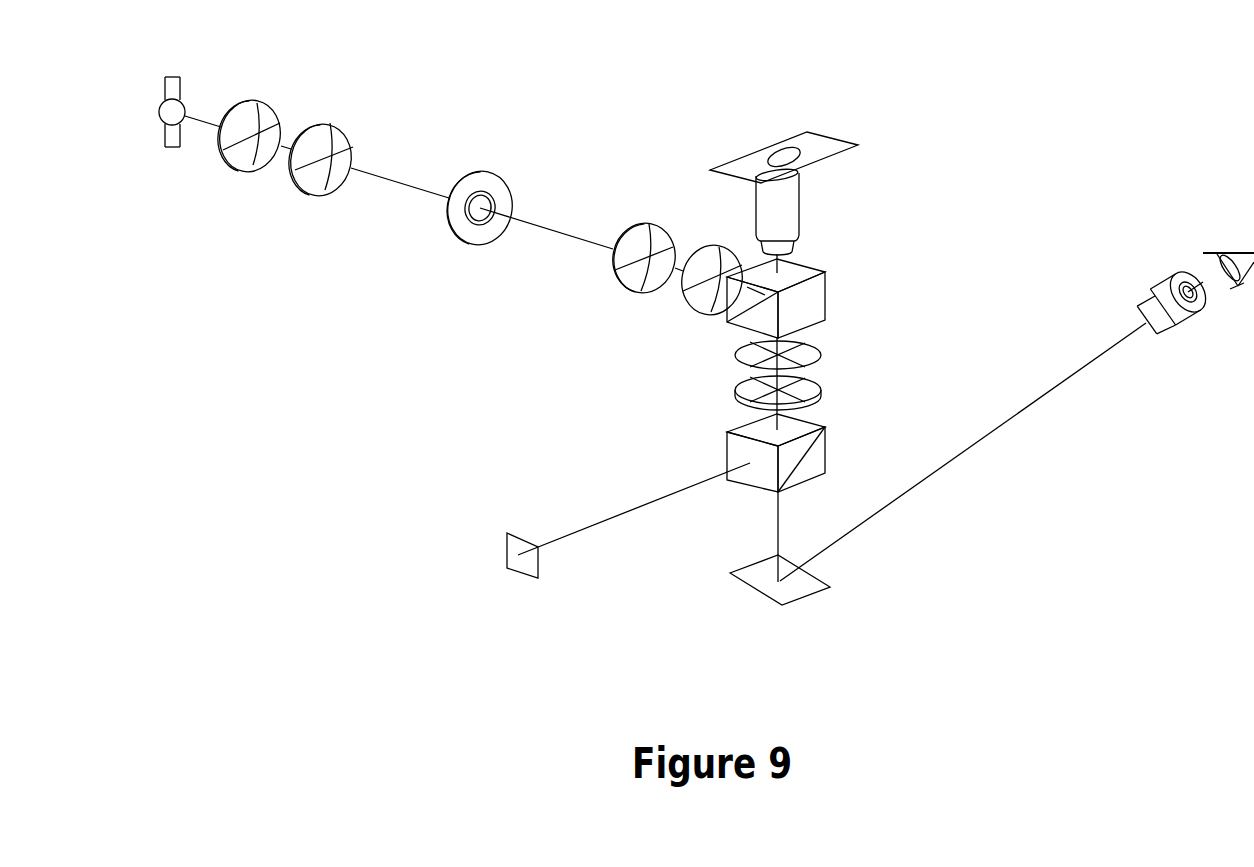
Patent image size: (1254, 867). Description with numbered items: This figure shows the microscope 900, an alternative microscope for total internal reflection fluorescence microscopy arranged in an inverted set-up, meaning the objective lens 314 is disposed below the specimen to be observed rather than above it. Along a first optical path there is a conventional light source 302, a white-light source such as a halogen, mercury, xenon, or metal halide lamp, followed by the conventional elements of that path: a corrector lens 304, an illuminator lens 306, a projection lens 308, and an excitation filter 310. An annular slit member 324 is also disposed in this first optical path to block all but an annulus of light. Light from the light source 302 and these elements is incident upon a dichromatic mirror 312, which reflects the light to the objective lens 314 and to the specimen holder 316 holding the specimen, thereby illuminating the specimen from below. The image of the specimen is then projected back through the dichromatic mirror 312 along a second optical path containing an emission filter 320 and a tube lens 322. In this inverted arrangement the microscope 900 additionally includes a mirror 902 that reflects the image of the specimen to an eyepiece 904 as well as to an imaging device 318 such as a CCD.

The microscope 900 is at (1059, 100).
The conventional light source 302 is at (175, 77).
The corrector lens 304 is at (263, 102).
The illuminator lens 306 is at (334, 124).
The annular slit member 324 is at (512, 165).
The projection lens 308 is at (663, 224).
The excitation filter 310 is at (687, 308).
The dichromatic mirror 312 is at (828, 310).
The objective lens 314 is at (800, 202).
The specimen holder 316 is at (851, 147).
The emission filter 320 is at (823, 352).
The tube lens 322 is at (823, 390).
The imaging device 318 is at (508, 570).
The mirror 902 is at (761, 597).
The eyepiece 904 is at (1165, 336).